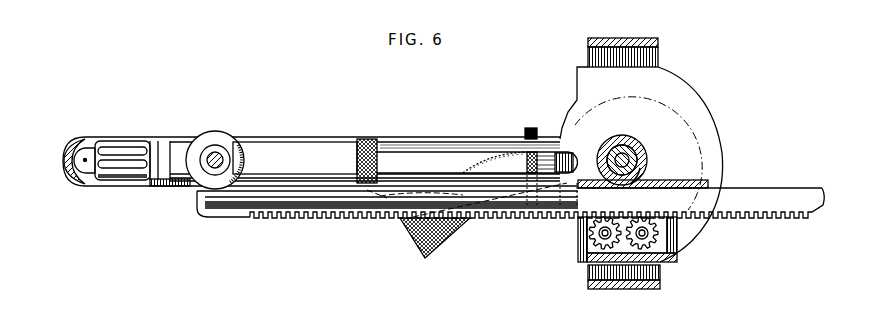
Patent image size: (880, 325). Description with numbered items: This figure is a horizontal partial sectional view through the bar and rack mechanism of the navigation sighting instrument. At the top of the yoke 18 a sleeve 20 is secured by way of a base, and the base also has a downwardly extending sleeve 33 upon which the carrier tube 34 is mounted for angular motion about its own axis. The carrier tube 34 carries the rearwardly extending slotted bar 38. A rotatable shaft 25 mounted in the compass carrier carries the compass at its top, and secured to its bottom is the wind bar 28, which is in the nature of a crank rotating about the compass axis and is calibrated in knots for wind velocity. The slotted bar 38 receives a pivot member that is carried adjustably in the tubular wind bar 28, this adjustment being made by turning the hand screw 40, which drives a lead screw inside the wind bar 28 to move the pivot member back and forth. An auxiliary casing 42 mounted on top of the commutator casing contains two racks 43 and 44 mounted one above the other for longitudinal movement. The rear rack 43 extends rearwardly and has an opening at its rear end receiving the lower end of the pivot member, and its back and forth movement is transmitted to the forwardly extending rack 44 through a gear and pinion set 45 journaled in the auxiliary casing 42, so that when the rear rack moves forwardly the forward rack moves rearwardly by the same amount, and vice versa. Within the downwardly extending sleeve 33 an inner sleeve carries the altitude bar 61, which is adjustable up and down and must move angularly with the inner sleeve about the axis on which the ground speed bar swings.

The yoke 18 is at (658, 43).
The sleeve 20 is at (647, 153).
The rotatable shaft 25 is at (243, 148).
The wind bar 28 is at (323, 155).
The downwardly extending sleeve 33 is at (640, 147).
The carrier tube 34 is at (650, 162).
The slotted bar 38 is at (80, 178).
The hand screw 40 is at (127, 188).
The auxiliary casing 42 is at (588, 270).
The rack 43 is at (340, 212).
The rack 44 is at (722, 190).
The gear and pinion set 45 is at (585, 250).
The altitude bar 61 is at (650, 167).